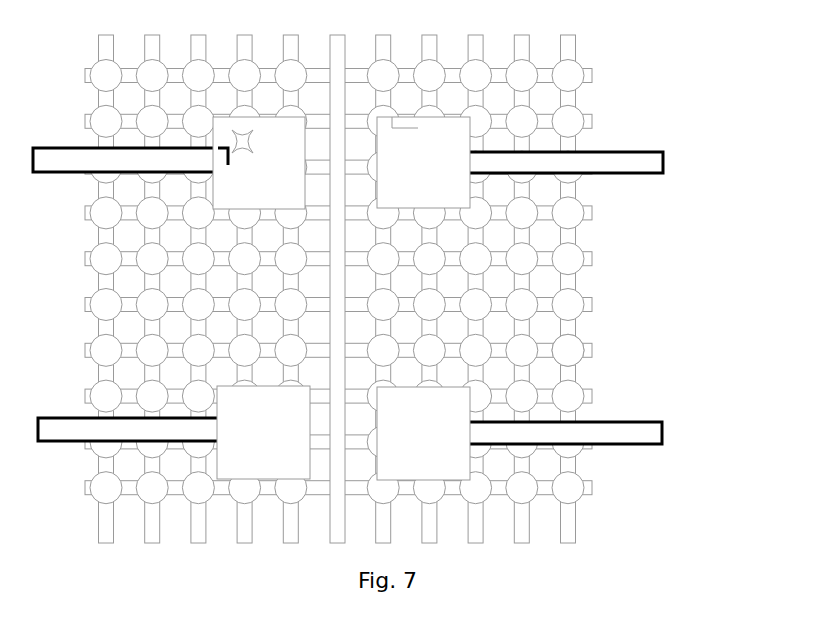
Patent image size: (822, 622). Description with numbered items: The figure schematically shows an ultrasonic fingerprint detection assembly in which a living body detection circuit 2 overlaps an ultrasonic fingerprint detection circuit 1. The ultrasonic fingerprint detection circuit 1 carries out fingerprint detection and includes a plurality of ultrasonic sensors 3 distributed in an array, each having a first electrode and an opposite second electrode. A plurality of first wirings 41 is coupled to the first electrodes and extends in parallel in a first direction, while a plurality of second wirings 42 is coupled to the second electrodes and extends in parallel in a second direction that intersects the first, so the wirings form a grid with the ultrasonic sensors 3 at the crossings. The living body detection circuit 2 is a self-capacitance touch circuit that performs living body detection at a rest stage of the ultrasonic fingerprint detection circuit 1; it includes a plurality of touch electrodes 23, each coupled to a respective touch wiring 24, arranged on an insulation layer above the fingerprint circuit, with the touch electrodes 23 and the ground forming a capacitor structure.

The ultrasonic fingerprint detection circuit 1 is at (388, 289).
The living body detection circuit 2 is at (554, 192).
The touch electrode 23 is at (423, 140).
The touch wiring 24 is at (532, 170).
The ultrasonic sensor 3 is at (580, 347).
The first wiring 41 is at (568, 525).
The second wiring 42 is at (588, 400).